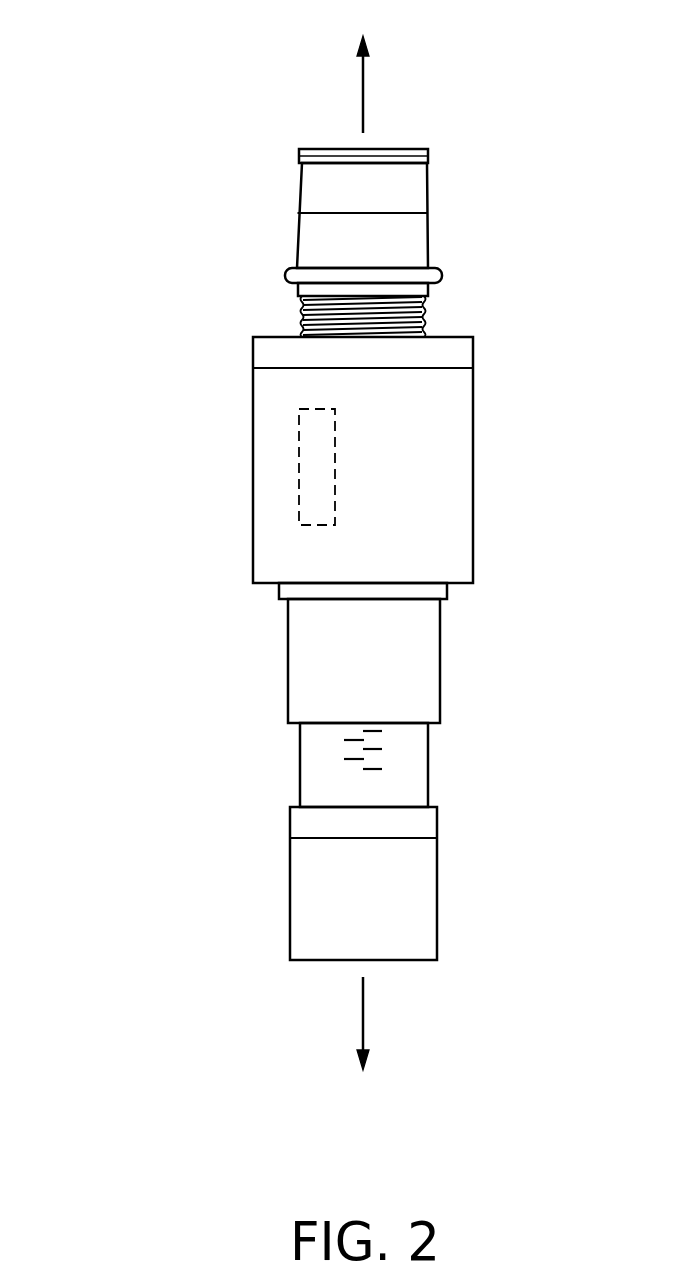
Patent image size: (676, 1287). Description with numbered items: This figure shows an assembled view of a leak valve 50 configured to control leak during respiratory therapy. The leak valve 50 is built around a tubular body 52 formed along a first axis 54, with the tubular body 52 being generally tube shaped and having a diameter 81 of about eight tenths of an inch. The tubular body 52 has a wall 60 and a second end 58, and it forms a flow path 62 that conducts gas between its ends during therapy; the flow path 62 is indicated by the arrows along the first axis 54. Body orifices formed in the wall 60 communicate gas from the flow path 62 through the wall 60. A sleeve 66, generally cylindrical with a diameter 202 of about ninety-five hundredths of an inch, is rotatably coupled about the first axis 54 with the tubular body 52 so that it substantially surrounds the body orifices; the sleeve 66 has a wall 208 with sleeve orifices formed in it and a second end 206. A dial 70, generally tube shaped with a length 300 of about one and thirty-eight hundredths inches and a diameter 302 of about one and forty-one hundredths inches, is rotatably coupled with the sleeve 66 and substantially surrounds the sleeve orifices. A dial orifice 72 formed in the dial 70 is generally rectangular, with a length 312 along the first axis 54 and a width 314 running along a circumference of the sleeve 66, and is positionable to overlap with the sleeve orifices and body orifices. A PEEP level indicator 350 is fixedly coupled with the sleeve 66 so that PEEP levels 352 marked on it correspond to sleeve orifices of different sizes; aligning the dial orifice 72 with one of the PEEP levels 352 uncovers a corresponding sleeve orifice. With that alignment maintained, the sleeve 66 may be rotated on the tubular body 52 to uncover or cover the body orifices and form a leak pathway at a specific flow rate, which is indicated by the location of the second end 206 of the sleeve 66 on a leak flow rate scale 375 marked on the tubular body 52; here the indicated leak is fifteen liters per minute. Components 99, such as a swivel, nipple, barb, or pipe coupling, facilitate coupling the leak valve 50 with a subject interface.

The leak valve 50 is at (106, 133).
The first axis 54 is at (363, 557).
The flow path 62 is at (411, 119).
The components 99 is at (428, 230).
The PEEP level indicator 350 is at (473, 337).
The PEEP levels 352 is at (340, 352).
The diameter 302 is at (508, 392).
The length 300 is at (570, 583).
The dial orifice 72 is at (299, 478).
The length 312 is at (390, 525).
The width 314 is at (265, 551).
The dial 70 is at (253, 565).
The diameter 202 is at (473, 630).
The sleeve 66 is at (288, 681).
The wall 208 is at (440, 670).
The second end 206 is at (440, 724).
The diameter 81 is at (462, 748).
The tubular body 52 is at (300, 768).
The leak flow rate scale 375 is at (309, 781).
The wall 60 is at (428, 790).
The second end 58 is at (437, 960).